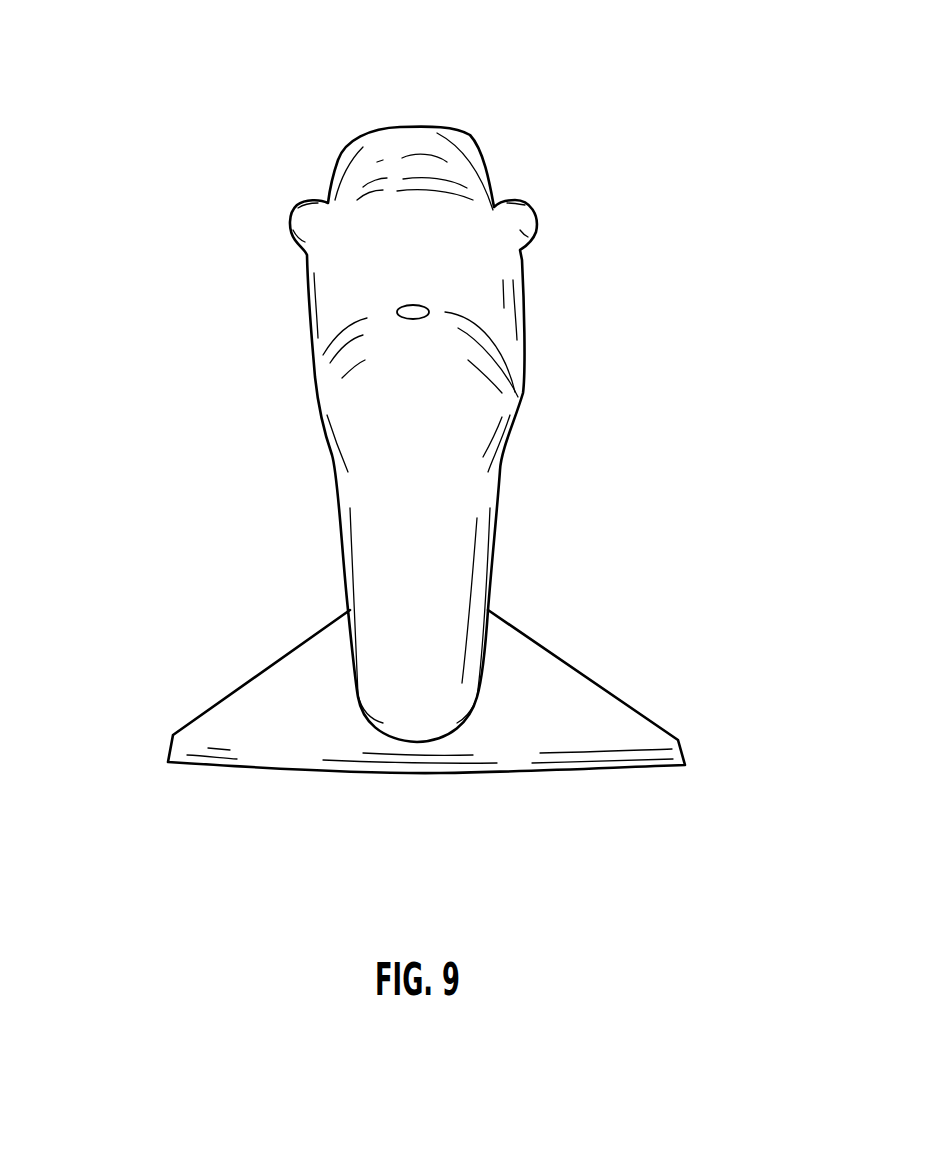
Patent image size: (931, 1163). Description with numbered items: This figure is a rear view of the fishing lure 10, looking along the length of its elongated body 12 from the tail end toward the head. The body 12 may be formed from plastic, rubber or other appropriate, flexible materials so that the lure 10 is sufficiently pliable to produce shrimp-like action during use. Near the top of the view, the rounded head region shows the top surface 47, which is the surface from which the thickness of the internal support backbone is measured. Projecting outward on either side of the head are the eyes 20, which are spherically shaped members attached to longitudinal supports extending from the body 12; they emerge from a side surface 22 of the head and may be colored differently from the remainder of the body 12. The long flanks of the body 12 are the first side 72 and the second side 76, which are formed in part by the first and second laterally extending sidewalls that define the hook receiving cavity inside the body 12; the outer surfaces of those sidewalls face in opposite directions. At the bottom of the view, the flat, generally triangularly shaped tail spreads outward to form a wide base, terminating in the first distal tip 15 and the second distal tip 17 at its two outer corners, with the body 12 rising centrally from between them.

The fishing lure 10 is at (551, 109).
The top surface 47 is at (420, 148).
The eyes 20 is at (290, 222).
The body 12 is at (485, 323).
The second side 76 is at (510, 357).
The first side 72 is at (310, 343).
The side surface 22 is at (421, 409).
The first distal tip 15 is at (687, 752).
The second distal tip 17 is at (173, 740).